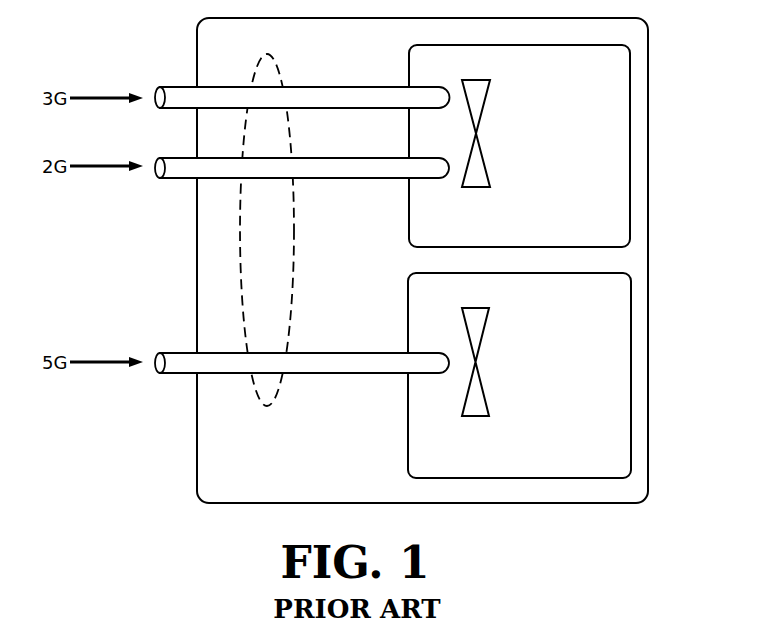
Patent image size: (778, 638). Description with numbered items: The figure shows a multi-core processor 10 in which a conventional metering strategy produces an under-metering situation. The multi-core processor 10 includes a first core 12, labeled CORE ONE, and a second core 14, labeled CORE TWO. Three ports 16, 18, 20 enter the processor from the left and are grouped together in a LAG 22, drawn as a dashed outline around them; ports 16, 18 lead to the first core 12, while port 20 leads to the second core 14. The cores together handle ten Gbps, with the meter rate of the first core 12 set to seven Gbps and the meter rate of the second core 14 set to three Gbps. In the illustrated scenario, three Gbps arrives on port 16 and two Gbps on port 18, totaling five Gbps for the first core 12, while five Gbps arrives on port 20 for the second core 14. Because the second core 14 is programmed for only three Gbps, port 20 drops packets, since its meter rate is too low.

The multi-core processor 10 is at (197, 451).
The first core 12 is at (633, 142).
The second core 14 is at (633, 362).
The port 16 is at (182, 87).
The port 18 is at (182, 178).
The port 20 is at (182, 353).
The LAG 22 is at (295, 247).